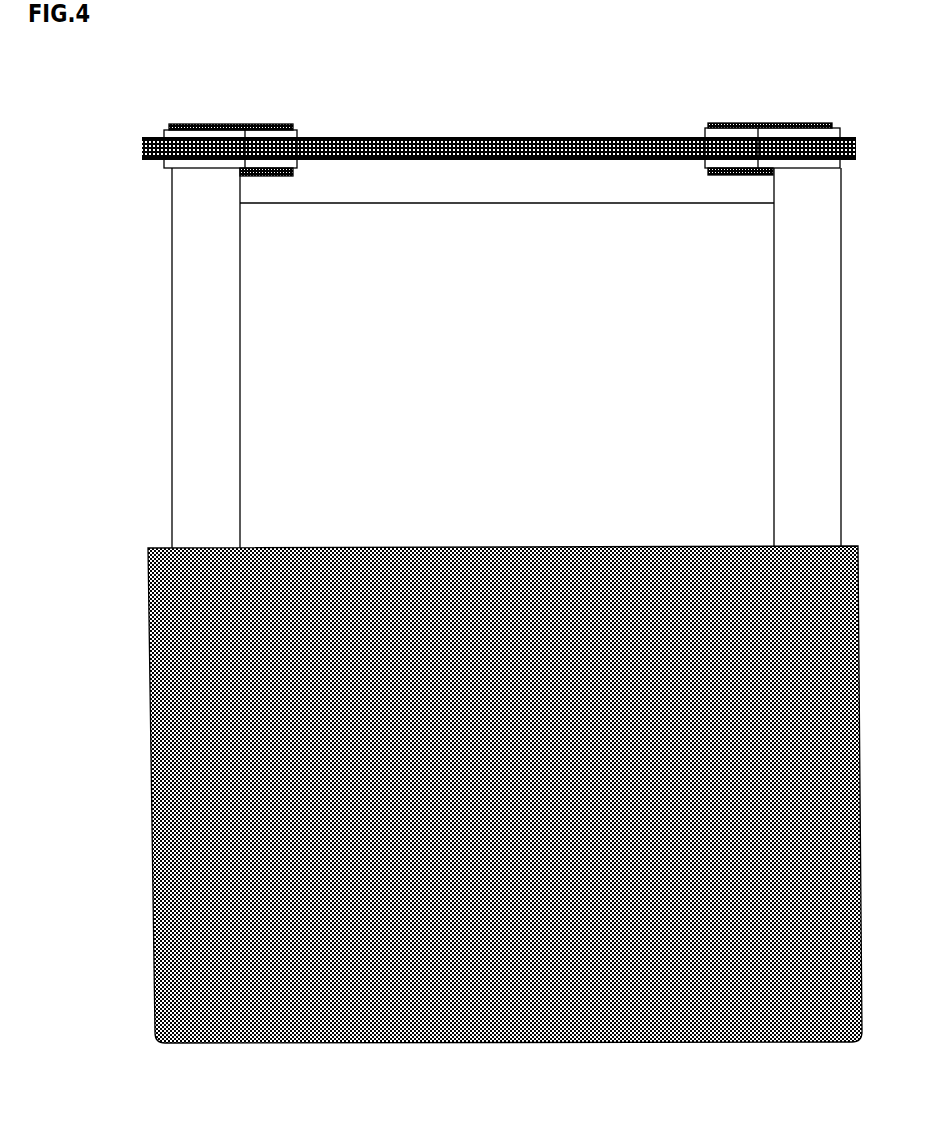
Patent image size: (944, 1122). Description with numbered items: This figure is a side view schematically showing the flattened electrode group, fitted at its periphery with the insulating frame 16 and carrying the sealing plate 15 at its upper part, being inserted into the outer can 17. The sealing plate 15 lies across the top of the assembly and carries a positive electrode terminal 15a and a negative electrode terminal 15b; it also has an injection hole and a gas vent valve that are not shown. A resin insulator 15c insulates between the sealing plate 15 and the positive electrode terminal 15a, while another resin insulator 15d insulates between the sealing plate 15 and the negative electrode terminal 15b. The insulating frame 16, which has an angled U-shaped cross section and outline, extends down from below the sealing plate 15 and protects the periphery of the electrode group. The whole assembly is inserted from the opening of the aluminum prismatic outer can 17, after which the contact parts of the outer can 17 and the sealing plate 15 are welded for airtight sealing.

The sealing plate 15 is at (502, 137).
The positive electrode terminal 15a is at (755, 127).
The negative electrode terminal 15b is at (242, 124).
The resin insulator 15c is at (752, 170).
The resin insulator 15d is at (284, 170).
The insulating frame 16 is at (182, 258).
The outer can 17 is at (473, 1023).